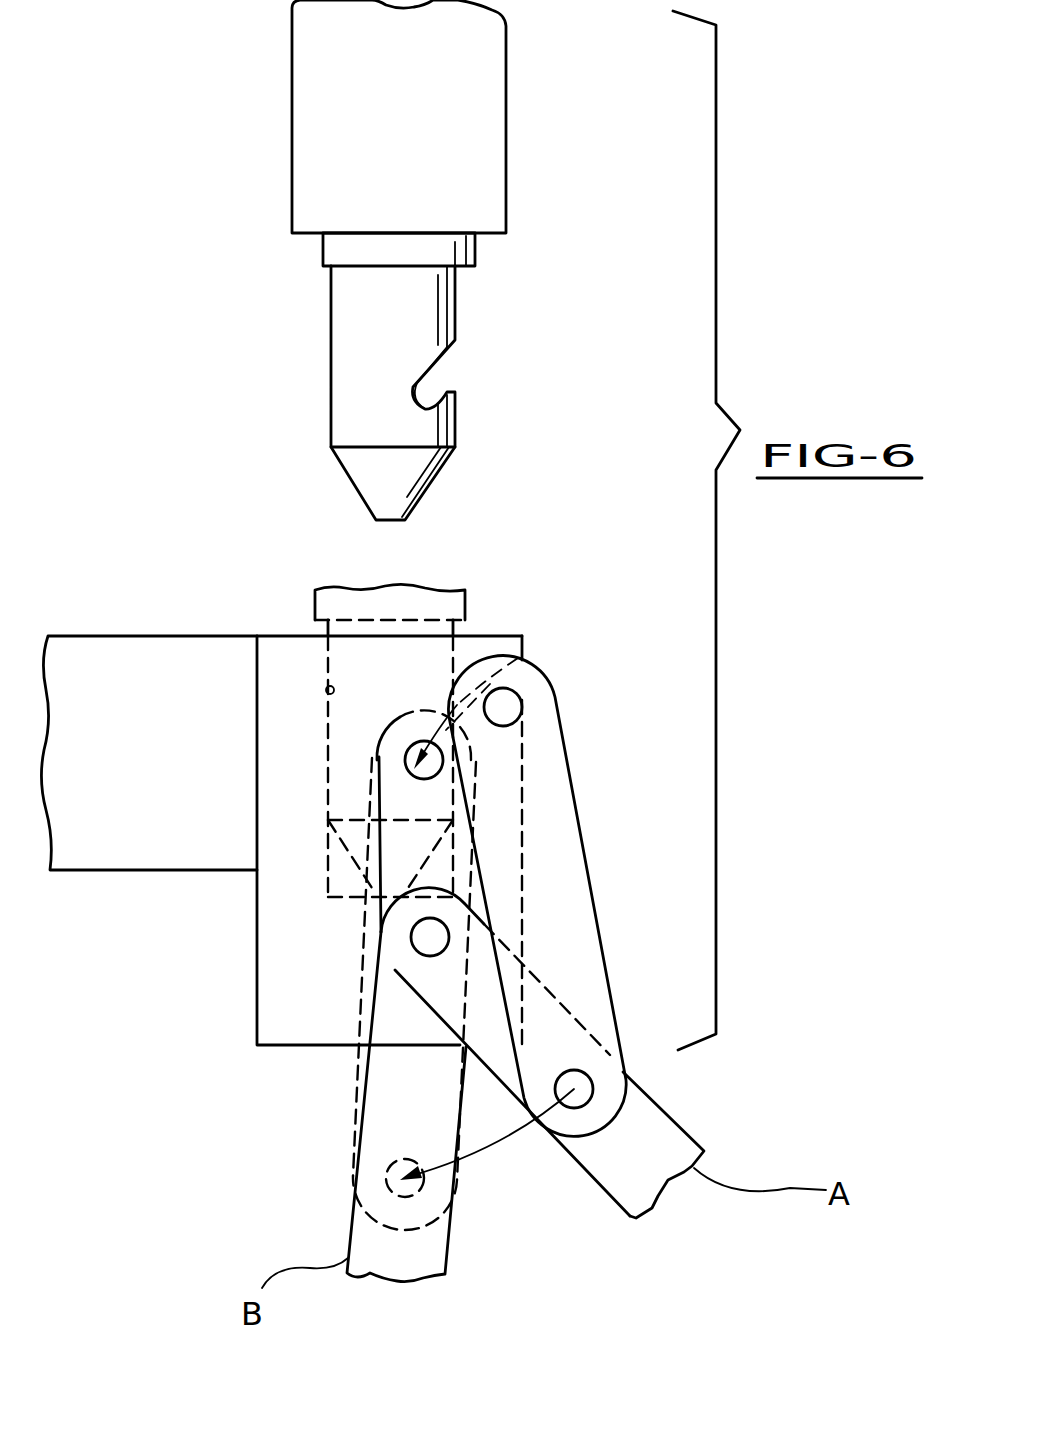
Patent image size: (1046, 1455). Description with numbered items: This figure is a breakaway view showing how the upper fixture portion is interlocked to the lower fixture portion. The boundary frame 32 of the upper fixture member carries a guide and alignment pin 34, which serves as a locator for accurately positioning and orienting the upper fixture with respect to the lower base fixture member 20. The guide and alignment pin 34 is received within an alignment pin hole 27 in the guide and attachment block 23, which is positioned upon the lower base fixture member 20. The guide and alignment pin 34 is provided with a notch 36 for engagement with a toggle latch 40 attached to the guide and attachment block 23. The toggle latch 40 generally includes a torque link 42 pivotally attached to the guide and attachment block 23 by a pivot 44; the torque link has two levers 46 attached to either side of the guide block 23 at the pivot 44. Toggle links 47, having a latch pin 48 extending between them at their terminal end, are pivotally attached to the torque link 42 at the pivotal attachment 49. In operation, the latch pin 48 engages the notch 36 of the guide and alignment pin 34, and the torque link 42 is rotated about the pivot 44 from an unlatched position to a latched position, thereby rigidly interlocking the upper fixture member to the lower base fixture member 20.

The lower base fixture member 20 is at (171, 763).
The guide and attachment block 23 is at (273, 636).
The alignment pin hole 27 is at (322, 686).
The boundary frame 32 is at (508, 122).
The guide and alignment pin 34 is at (331, 310).
The notch 36 is at (421, 405).
The toggle latch 40 is at (514, 969).
The torque link 42 is at (678, 1127).
The pivot 44 is at (411, 935).
The lever 46 is at (497, 1077).
The toggle link 47 is at (572, 777).
The latch pin 48 is at (507, 705).
The pivotal attachment 49 is at (574, 1089).